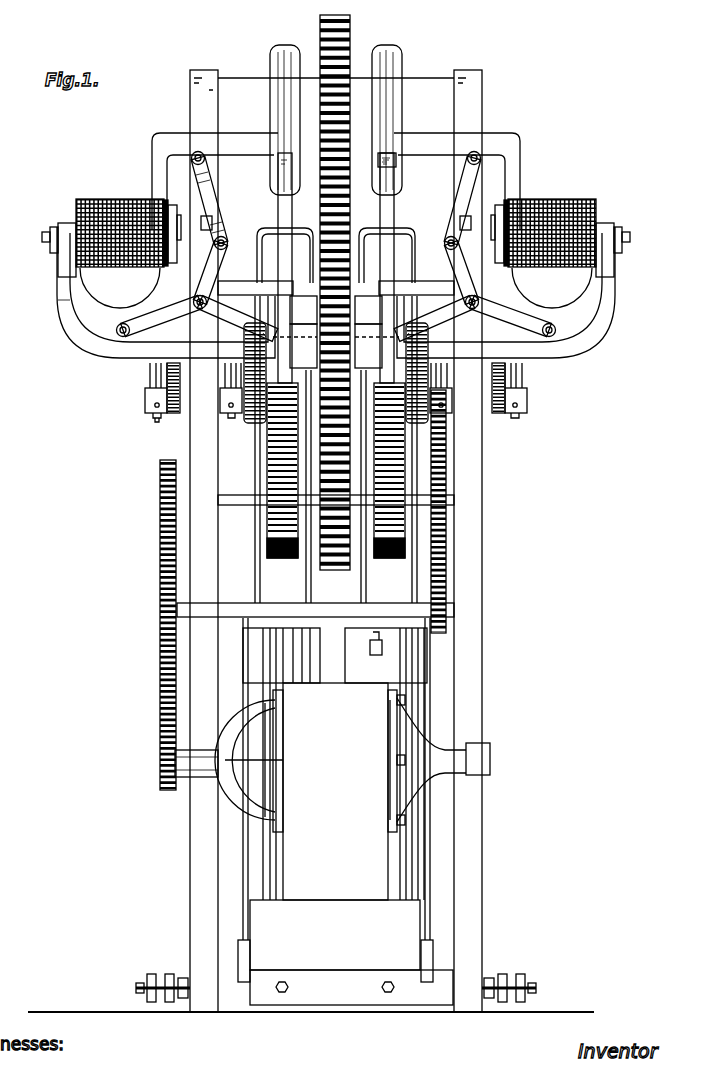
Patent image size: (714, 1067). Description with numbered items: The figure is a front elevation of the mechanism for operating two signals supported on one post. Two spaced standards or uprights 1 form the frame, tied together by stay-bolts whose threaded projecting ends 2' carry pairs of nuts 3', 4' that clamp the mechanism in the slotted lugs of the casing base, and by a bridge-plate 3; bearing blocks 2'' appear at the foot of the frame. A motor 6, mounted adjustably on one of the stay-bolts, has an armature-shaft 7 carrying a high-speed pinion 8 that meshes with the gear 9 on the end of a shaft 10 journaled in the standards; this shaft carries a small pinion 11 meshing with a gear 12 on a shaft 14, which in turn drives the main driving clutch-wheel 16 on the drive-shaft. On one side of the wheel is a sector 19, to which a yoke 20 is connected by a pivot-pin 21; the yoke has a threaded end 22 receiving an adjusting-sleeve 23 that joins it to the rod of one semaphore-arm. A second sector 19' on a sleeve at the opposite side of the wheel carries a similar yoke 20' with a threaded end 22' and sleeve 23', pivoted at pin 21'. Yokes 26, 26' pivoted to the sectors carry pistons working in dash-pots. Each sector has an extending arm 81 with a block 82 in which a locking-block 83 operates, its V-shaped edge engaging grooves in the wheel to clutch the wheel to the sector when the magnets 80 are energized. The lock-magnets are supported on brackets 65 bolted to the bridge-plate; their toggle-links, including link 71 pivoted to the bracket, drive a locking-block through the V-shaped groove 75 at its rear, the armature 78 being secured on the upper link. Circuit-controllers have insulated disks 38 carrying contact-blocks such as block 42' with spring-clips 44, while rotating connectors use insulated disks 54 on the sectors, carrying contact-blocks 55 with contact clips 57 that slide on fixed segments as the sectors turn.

The standards or uprights 1 is at (482, 630).
The bridge-plate 3 is at (336, 64).
The motor 6 is at (370, 844).
The armature-shaft 7 is at (224, 776).
The high-speed pinion 8 is at (175, 772).
The gear 9 is at (160, 630).
The shaft 10 is at (235, 605).
The small pinion 11 is at (446, 601).
The gear 12 is at (446, 530).
The shaft 14 is at (454, 500).
The main driving clutch-wheel 16 is at (335, 306).
The sector 19 is at (385, 481).
The sector 19' is at (261, 470).
The yoke 20 is at (394, 250).
The yoke 20' is at (275, 245).
The pivot-pin 21 is at (470, 779).
The rod 21' is at (199, 779).
The threaded end 22 is at (402, 268).
The threaded end 22' is at (262, 268).
The adjusting-sleeve 23 is at (403, 120).
The adjusting-sleeve 23' is at (265, 120).
The yoke 26 is at (385, 486).
The yoke 26' is at (290, 486).
The projecting ends of the stay-bolts 2' is at (144, 988).
The bearing block 2'' is at (335, 959).
The nuts 3' is at (172, 976).
The nuts 4' is at (148, 976).
The insulated disk 38 is at (154, 420).
The contact-block 42' is at (136, 400).
The spring-clips 44 is at (148, 378).
The insulated disk 54 is at (220, 364).
The contact-block 55 is at (231, 413).
The contact springs or clips 57 is at (220, 396).
The bracket 65 is at (58, 330).
The toggle-link 71 is at (157, 314).
The V-shaped groove 75 is at (193, 176).
The armature 78 is at (207, 260).
The magnet coil 80 is at (336, 227).
The extending arm 81 is at (390, 183).
The block 82 is at (336, 346).
The locking-block 83 is at (336, 310).